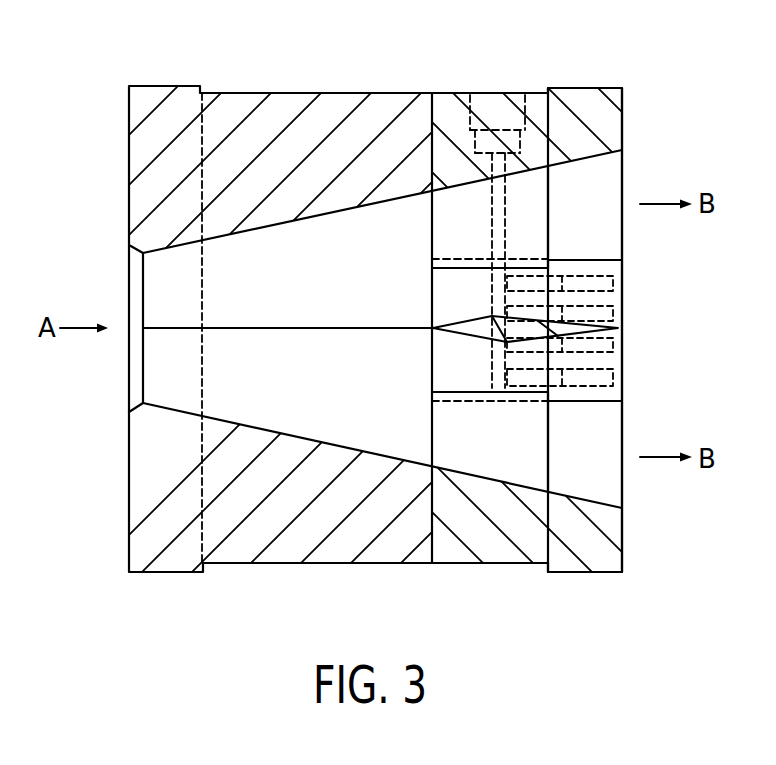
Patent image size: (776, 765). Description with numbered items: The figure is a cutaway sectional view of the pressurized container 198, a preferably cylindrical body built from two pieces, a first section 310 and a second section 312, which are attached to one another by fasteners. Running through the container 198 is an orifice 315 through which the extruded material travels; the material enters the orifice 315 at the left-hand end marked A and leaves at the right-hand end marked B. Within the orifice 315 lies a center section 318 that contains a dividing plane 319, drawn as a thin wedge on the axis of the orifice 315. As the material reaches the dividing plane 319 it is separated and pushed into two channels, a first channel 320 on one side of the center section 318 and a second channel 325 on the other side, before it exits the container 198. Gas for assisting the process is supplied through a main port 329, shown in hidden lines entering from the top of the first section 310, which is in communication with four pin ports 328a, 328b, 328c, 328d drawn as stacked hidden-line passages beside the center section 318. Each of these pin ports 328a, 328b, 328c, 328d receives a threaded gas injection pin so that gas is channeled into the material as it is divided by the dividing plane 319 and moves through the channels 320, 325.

The pressurized container 198 is at (355, 55).
The first section 310 is at (582, 88).
The second section 312 is at (240, 92).
The orifice 315 is at (360, 287).
The center section 318 is at (486, 384).
The dividing plane 319 is at (457, 331).
The first channel 320 is at (605, 182).
The second channel 325 is at (602, 470).
The pin port 328a is at (623, 280).
The pin port 328b is at (623, 313).
The pin port 328c is at (623, 343).
The pin port 328d is at (623, 375).
The main port 329 is at (488, 93).